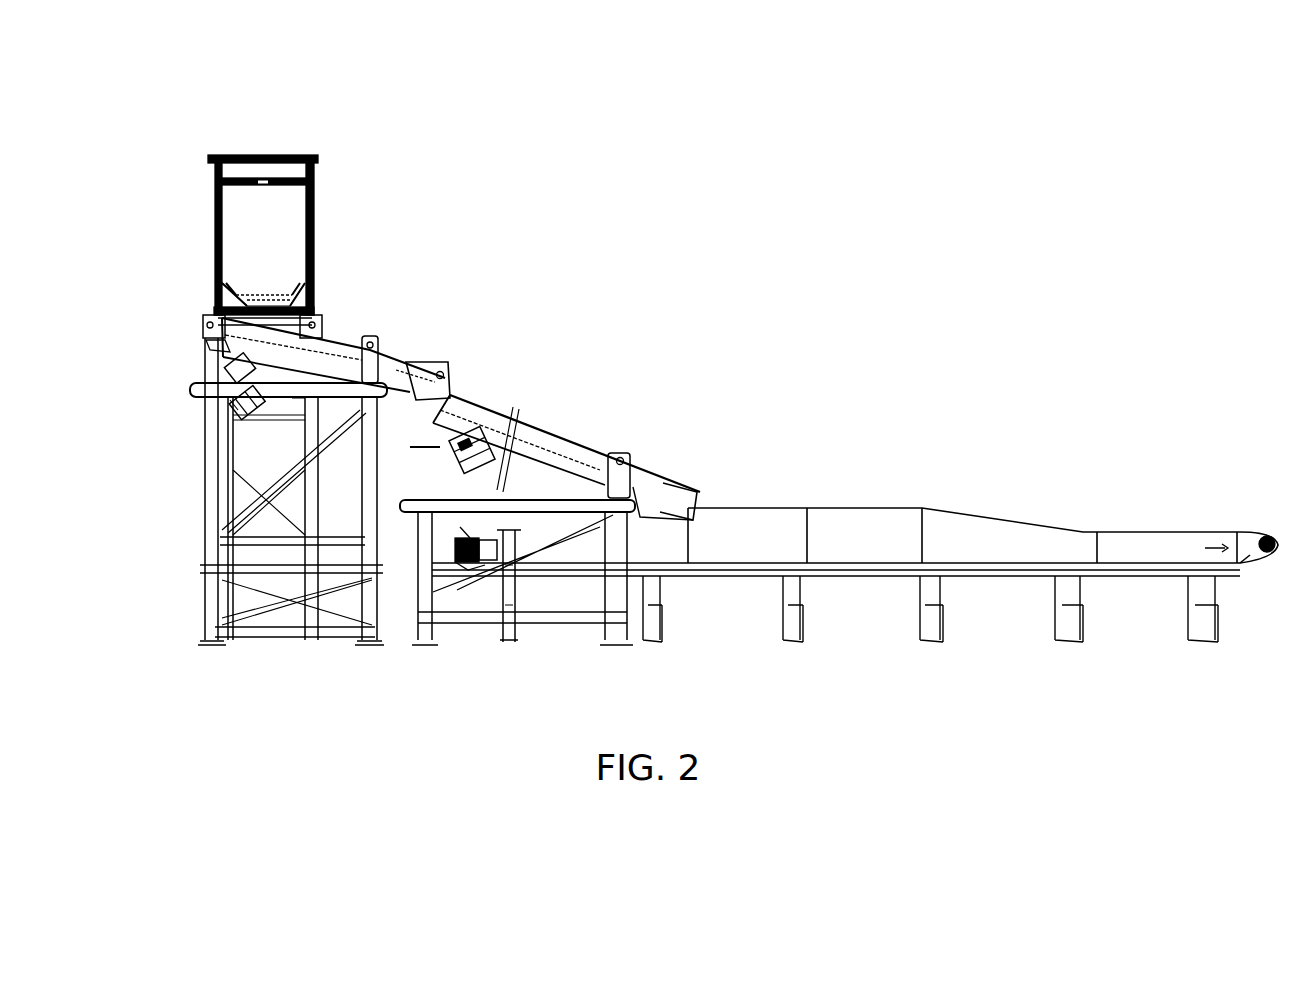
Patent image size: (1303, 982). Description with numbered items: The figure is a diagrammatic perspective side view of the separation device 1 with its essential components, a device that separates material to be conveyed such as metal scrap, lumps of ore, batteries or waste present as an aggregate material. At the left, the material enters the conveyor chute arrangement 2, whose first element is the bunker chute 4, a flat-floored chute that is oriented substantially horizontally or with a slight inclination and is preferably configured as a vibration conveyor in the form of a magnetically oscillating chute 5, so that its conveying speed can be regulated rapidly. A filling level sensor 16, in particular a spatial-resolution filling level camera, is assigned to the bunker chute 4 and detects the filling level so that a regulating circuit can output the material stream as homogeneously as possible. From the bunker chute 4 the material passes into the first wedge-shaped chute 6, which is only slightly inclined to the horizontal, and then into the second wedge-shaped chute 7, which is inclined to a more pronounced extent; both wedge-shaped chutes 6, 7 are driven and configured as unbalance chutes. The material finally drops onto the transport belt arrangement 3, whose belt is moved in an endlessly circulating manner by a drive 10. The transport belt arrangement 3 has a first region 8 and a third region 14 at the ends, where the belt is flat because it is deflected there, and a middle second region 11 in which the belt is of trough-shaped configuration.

The separation device 1 is at (830, 323).
The conveyor chute arrangement 2 is at (400, 139).
The transport belt arrangement 3 is at (805, 462).
The bunker chute 4 is at (334, 204).
The magnetically oscillating chute 5 is at (275, 300).
The first wedge-shaped chute 6 is at (330, 360).
The second wedge-shaped chute 7 is at (500, 430).
The first region 8 is at (512, 600).
The drive 10 is at (460, 548).
The second region 11 is at (833, 532).
The third region 14 is at (1178, 510).
The filling level sensor 16 is at (263, 183).